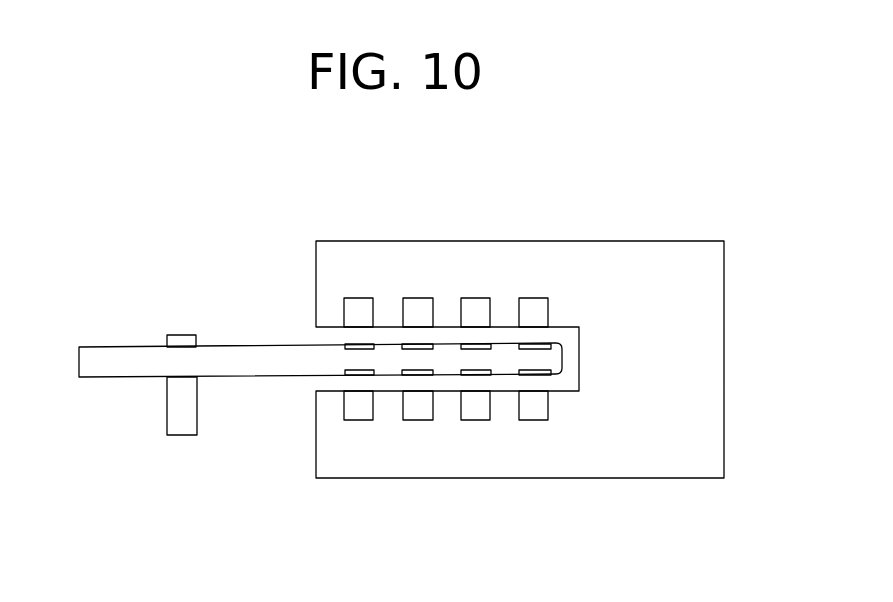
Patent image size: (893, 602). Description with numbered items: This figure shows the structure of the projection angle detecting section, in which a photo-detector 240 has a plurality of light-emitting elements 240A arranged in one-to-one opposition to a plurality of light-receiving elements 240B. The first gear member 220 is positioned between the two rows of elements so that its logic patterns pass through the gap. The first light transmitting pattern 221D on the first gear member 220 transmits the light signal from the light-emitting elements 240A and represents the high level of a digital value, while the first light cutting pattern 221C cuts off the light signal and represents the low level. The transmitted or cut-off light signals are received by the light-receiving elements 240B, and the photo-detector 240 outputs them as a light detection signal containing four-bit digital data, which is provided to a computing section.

The first gear member 220 is at (233, 355).
The first light cutting pattern 221C is at (477, 352).
The first light transmitting pattern 221D is at (362, 350).
The photo-detector 240 is at (668, 305).
The light-emitting elements 240A is at (535, 312).
The light-receiving elements 240B is at (536, 407).